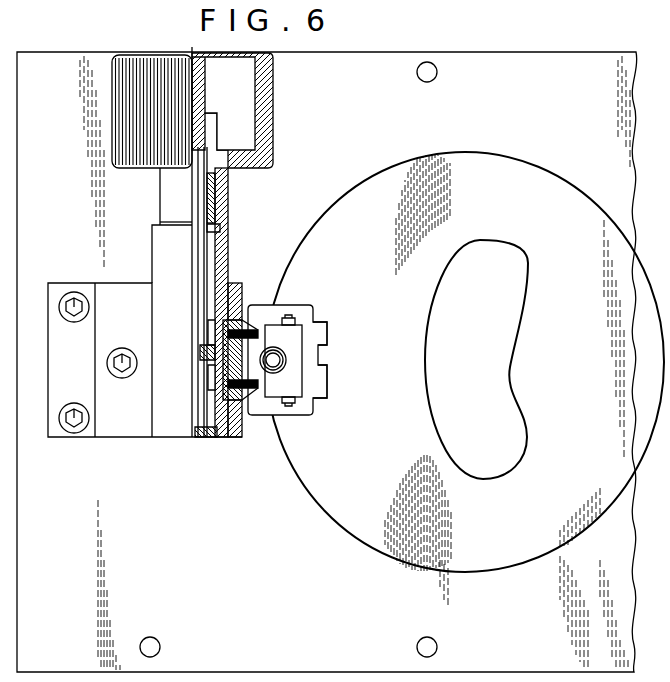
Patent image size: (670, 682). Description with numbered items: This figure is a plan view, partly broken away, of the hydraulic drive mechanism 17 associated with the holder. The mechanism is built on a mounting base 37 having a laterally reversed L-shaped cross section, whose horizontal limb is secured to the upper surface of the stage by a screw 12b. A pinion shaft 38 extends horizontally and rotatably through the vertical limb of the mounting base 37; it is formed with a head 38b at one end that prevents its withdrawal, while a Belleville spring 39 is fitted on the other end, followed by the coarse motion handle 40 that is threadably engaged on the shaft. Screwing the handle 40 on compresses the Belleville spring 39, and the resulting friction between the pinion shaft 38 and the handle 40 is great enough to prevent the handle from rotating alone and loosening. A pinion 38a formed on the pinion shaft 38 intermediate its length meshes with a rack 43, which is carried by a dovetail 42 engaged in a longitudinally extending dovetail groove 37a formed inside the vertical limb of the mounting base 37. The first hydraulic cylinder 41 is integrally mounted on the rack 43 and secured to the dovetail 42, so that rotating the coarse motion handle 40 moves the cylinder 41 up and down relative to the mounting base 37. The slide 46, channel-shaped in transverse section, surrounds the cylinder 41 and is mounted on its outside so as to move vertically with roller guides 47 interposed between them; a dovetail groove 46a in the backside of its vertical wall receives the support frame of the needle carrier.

The screw 12b is at (120, 352).
The hydraulic drive mechanism 17 is at (263, 431).
The mounting base 37 is at (137, 437).
The dovetail groove 37a is at (240, 322).
The pinion shaft 38 is at (194, 254).
The pinion 38a is at (208, 348).
The head 38b is at (199, 437).
The Belleville spring 39 is at (220, 228).
The coarse motion handle 40 is at (273, 135).
The first hydraulic cylinder 41 is at (297, 382).
The dovetail 42 is at (236, 440).
The rack 43 is at (207, 365).
The slide 46 is at (284, 306).
The dovetail groove 46a is at (319, 358).
The roller guides 47 is at (295, 320).